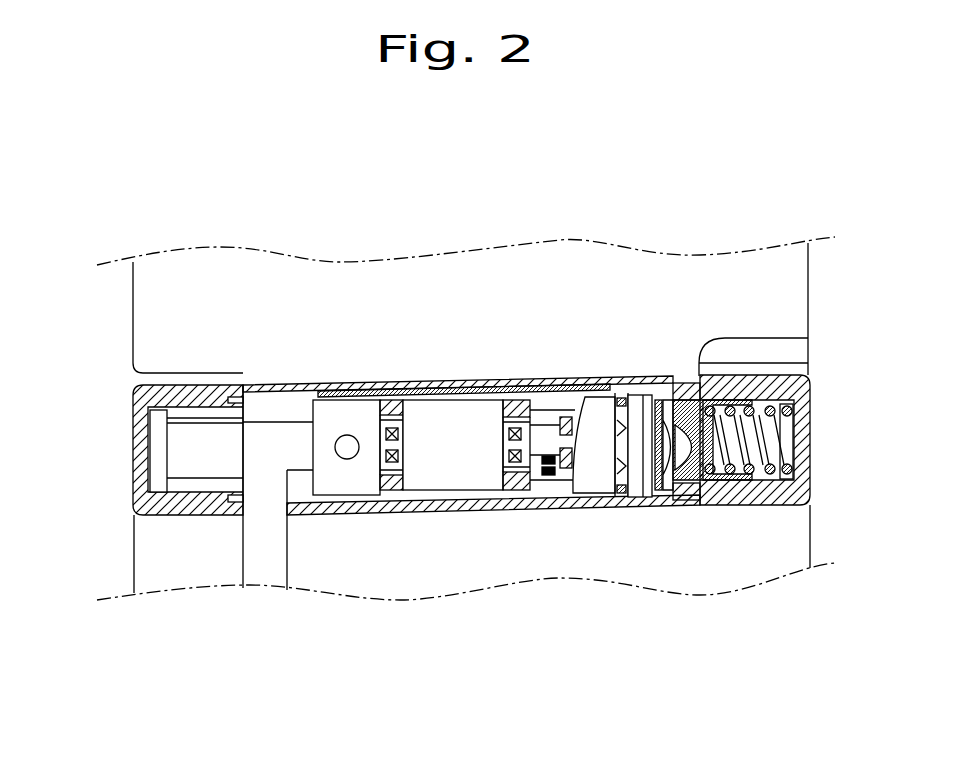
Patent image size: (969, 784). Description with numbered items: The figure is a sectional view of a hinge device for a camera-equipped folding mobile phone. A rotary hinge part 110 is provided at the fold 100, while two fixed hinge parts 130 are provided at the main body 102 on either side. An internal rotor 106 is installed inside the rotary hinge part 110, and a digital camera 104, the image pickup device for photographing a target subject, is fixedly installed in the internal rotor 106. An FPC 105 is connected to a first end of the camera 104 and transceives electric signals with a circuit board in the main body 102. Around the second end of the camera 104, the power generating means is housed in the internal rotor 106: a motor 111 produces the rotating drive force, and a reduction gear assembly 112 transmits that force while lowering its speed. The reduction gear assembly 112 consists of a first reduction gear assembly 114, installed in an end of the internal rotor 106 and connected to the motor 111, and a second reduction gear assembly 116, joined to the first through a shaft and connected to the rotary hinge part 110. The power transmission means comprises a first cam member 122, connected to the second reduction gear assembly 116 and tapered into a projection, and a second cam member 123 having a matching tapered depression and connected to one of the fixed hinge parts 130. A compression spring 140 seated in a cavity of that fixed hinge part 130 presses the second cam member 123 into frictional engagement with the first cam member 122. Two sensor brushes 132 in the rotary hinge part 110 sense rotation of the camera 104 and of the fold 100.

The fold 100 is at (340, 278).
The main body 102 is at (457, 587).
The digital camera 104 is at (338, 488).
The FPC 105 is at (263, 578).
The internal rotor 106 is at (591, 405).
The rotary hinge part 110 is at (808, 338).
The motor 111 is at (480, 478).
The reduction gear assembly 112 is at (637, 682).
The first reduction gear assembly 114 is at (583, 480).
The second reduction gear assembly 116 is at (645, 497).
The first cam member 122 is at (705, 483).
The second cam member 123 is at (808, 367).
The fixed hinge part 130 is at (133, 430).
The sensor brush 132 is at (668, 395).
The compression spring 140 is at (797, 405).